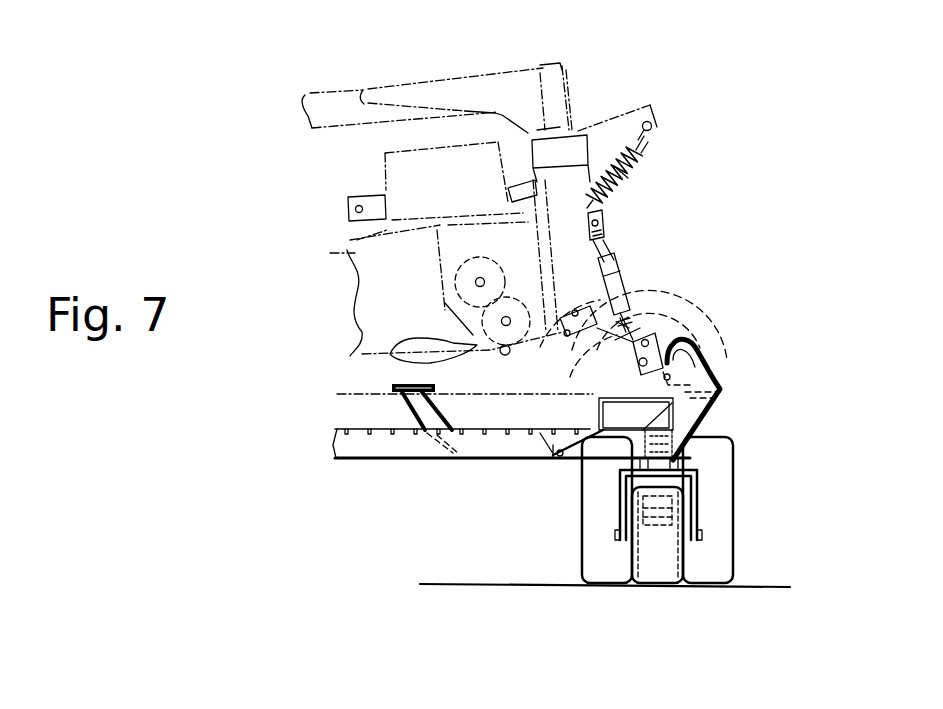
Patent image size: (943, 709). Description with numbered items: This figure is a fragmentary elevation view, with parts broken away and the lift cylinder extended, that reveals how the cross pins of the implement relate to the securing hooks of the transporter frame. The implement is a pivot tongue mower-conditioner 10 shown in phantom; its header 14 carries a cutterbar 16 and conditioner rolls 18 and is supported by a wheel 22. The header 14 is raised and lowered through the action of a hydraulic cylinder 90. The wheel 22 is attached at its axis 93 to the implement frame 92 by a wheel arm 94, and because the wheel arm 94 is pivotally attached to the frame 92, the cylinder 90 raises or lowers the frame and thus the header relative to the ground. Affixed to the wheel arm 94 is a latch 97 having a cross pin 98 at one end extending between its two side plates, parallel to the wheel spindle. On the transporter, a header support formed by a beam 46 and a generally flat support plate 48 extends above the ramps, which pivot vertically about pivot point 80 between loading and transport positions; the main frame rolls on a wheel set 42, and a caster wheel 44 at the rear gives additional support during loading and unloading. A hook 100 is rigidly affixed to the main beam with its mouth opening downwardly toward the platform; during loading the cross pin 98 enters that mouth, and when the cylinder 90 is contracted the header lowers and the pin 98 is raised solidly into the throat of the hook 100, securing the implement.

The pivot tongue mower-conditioner 10 is at (700, 140).
The header 14 is at (347, 250).
The cutterbar 16 is at (437, 350).
The conditioner rolls 18 is at (500, 297).
The support wheel 22 is at (636, 302).
The wheel set 42 is at (722, 532).
The caster wheel 44 is at (657, 570).
The beam 46 is at (435, 403).
The support plate 48 is at (400, 377).
The pivot point 80 is at (560, 456).
The hydraulic cylinder 90 is at (617, 277).
The implement frame 92 is at (573, 205).
The axis 93 is at (592, 428).
The wheel arm 94 is at (582, 358).
The latch 97 is at (655, 345).
The cross pin 98 is at (700, 376).
The hook 100 is at (708, 354).